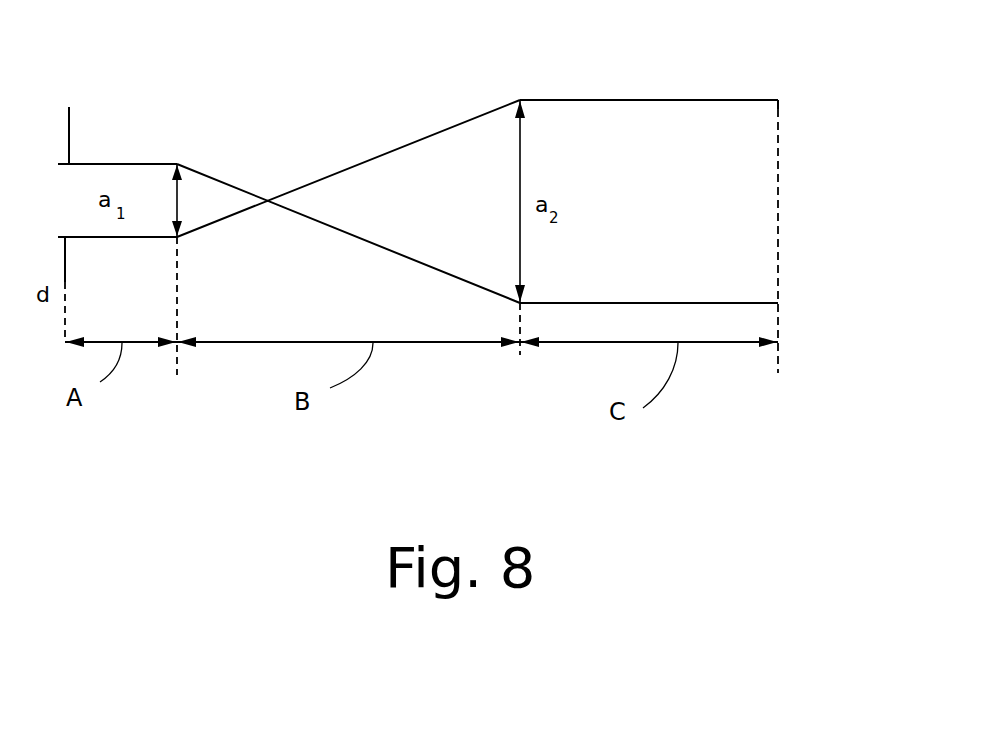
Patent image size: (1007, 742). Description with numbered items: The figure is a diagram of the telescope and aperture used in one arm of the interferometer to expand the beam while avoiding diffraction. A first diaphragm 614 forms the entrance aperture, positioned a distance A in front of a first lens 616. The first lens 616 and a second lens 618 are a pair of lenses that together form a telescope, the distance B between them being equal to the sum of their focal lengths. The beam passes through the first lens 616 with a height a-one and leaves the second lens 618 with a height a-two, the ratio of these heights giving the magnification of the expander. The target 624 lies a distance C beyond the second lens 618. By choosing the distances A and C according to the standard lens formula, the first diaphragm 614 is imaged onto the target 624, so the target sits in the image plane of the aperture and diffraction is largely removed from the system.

The first diaphragm 614 is at (69, 140).
The first lens 616 is at (177, 203).
The second lens 618 is at (521, 183).
The target 624 is at (778, 210).